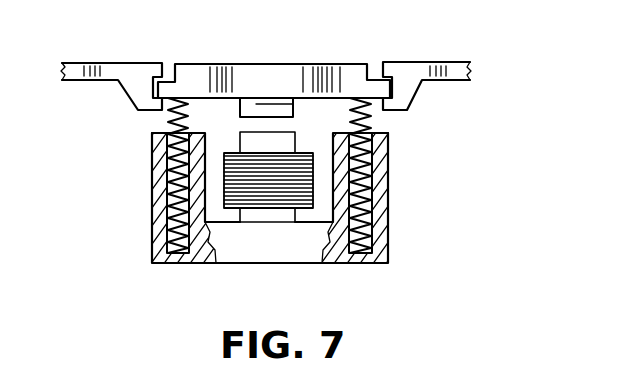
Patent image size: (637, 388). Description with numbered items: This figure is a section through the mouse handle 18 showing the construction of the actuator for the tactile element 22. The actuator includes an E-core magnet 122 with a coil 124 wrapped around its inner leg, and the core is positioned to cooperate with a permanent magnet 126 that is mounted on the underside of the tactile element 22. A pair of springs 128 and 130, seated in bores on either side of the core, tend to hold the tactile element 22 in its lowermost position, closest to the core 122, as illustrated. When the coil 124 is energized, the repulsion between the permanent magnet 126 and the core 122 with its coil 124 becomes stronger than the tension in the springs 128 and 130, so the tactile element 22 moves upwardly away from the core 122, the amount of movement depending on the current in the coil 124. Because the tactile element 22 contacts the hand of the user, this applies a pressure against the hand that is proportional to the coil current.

The mouse handle 18 is at (418, 62).
The tactile element 22 is at (340, 63).
The permanent magnet 126 is at (271, 104).
The coil 124 is at (301, 214).
The E-core magnet 122 is at (389, 153).
The spring 128 is at (389, 188).
The spring 130 is at (163, 191).